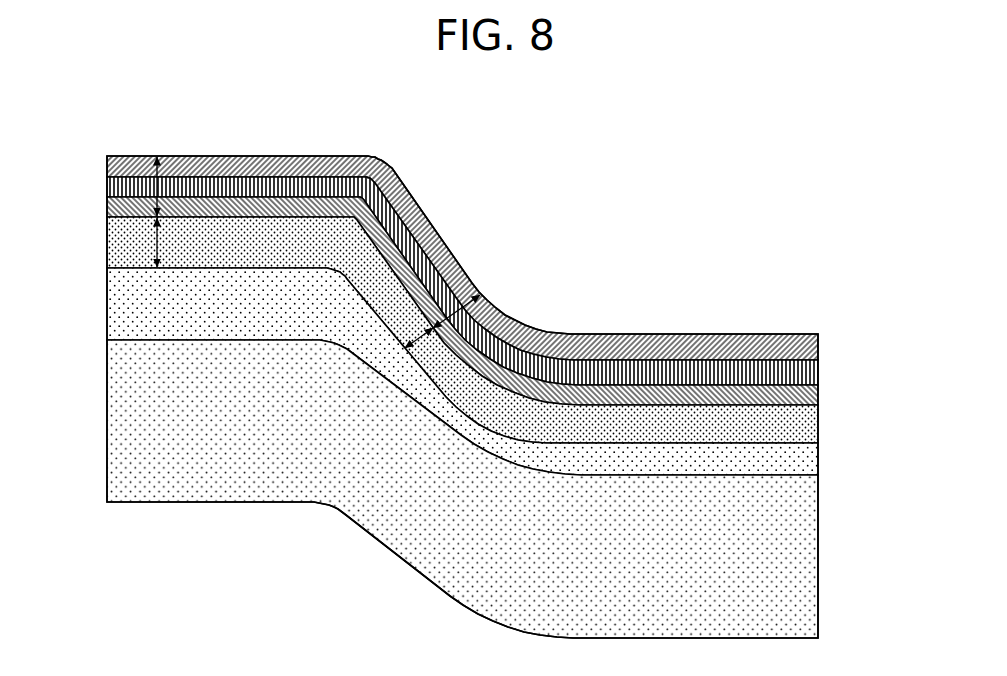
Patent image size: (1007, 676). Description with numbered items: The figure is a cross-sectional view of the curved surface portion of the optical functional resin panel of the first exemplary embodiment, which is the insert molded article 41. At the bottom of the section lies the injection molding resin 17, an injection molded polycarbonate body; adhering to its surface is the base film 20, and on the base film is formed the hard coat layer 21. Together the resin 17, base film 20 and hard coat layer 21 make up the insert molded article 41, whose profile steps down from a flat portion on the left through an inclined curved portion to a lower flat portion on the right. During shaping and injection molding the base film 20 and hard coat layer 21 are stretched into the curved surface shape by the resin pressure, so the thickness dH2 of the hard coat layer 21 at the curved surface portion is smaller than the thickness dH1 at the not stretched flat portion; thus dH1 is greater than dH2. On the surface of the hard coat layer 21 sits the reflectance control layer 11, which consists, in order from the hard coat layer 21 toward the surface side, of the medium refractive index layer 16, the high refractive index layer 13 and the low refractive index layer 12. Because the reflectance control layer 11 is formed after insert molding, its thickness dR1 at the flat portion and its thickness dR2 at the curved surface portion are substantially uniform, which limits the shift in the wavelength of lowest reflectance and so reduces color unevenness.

The reflectance control layer 11 is at (889, 300).
The low refractive index layer 12 is at (818, 341).
The high refractive index layer 13 is at (804, 375).
The medium refractive index layer 16 is at (804, 398).
The injection molding resin 17 is at (803, 593).
The base film 20 is at (805, 461).
The hard coat layer 21 is at (805, 425).
The insert molded article 41 is at (889, 410).
The thickness of the flat portion of the reflectance control layer dR1 is at (155, 187).
The thickness of the flat portion of the hard coat layer dH1 is at (155, 243).
The thickness of the curved surface portion of the hard coat layer dH2 is at (372, 200).
The thickness of the curved surface portion of the reflectance control layer dR2 is at (460, 265).